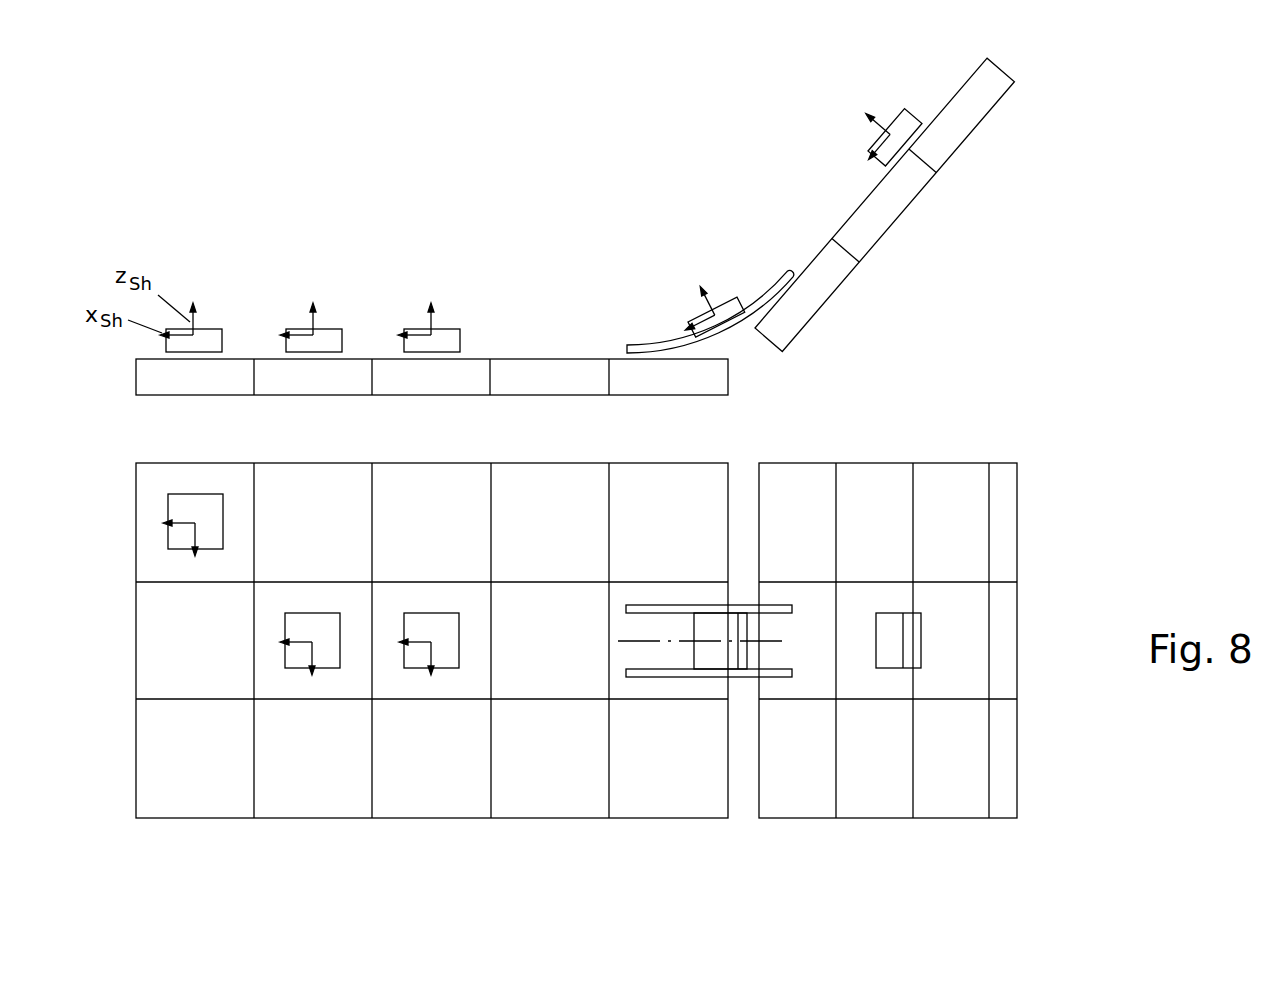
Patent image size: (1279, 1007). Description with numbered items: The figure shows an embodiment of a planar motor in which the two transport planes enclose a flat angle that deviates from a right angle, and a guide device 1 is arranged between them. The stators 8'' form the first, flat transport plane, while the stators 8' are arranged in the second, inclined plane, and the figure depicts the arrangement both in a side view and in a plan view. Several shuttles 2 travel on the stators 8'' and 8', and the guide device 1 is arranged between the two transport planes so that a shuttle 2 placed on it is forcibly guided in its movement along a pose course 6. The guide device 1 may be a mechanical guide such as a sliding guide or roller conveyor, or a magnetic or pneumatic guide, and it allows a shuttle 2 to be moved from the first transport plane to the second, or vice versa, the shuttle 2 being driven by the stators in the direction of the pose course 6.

The guide device 1 is at (762, 300).
The shuttle 2 is at (210, 340).
The pose course 6 is at (769, 640).
The stator 8' is at (884, 204).
The stator 8'' is at (478, 393).